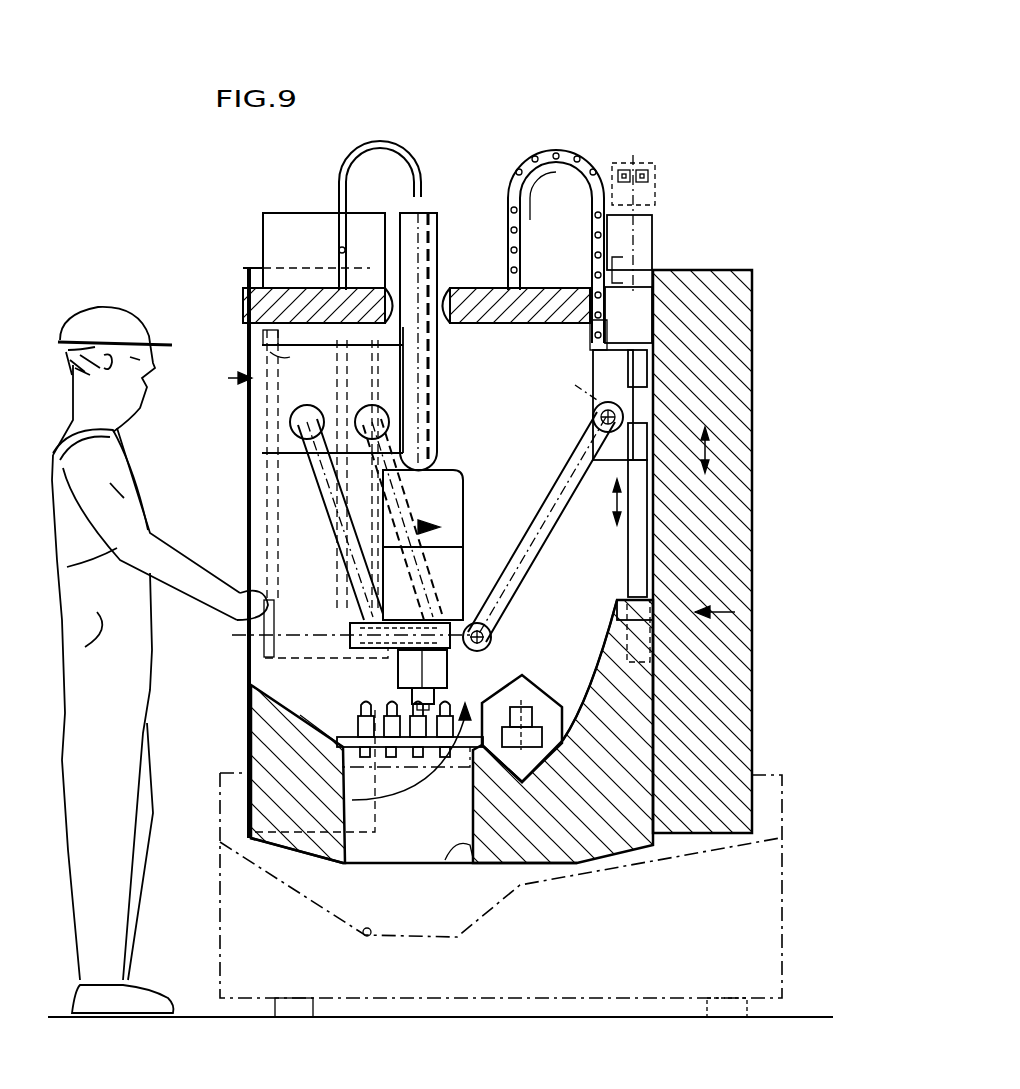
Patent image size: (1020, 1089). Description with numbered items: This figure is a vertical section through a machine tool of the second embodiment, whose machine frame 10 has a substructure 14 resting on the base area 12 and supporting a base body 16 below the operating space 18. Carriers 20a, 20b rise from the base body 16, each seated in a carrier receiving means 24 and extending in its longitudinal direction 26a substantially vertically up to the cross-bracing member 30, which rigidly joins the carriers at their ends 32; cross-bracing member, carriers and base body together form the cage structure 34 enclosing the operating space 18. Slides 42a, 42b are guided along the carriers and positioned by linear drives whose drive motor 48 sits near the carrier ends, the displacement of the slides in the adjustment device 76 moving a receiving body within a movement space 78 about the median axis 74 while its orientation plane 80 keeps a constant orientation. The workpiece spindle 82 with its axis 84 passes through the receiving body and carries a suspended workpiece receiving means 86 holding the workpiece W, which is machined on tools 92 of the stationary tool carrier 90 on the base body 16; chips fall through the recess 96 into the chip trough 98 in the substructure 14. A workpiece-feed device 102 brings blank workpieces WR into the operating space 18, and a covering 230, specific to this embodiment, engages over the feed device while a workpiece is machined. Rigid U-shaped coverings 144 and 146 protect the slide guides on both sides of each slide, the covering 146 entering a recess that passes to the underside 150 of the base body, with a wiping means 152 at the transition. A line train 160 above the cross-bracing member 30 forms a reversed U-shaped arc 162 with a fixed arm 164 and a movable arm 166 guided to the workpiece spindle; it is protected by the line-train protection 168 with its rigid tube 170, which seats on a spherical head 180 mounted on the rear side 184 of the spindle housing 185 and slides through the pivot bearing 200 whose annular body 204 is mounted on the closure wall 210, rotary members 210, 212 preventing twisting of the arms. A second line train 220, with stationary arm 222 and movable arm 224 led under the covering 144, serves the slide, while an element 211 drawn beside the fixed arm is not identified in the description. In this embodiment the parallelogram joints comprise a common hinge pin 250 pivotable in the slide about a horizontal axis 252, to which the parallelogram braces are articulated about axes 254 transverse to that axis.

The machine frame 10 is at (745, 795).
The base area 12 is at (192, 1019).
The substructure 14 is at (760, 977).
The base body 16 is at (523, 860).
The operating space 18 is at (248, 793).
The carrier 20a is at (735, 612).
The carrier 20b is at (217, 384).
The carrier receiving means 24 is at (630, 690).
The longitudinal direction 26a is at (713, 450).
The cross-bracing member 30 is at (477, 303).
The ends 32 is at (713, 290).
The cage structure 34 is at (570, 265).
The slide 42a is at (595, 352).
The slide 42b is at (247, 343).
The drive motor 48 is at (657, 170).
The median axis 74 is at (415, 500).
The adjustment device 76 is at (627, 495).
The movement space 78 is at (630, 565).
The orientation plane 80 is at (238, 633).
The workpiece spindle 82 is at (388, 522).
The spindle axis 84 is at (345, 545).
The workpiece receiving means 86 is at (398, 690).
The tool carrier 90 is at (248, 730).
The tools 92 is at (360, 732).
The recess 96 is at (445, 860).
The chip trough 98 is at (367, 935).
The workpiece-feed device 102 is at (540, 732).
The covering 144 is at (603, 252).
The covering 146 is at (630, 527).
The underside 150 is at (627, 860).
The wiping means 152 is at (630, 580).
The line train 160 is at (393, 125).
The reversed U-shaped arc 162 is at (374, 140).
The arm 164 is at (340, 268).
The arm 166 is at (447, 215).
The line-train protection 168 is at (363, 330).
The rigid tube 170 is at (243, 286).
The spherical head 180 is at (290, 422).
The rear side 184 is at (330, 456).
The housing 185 is at (360, 485).
The pivot bearing 200 is at (445, 245).
The annular body 204 is at (445, 262).
The closure wall 210 is at (520, 290).
The fastening point 211 is at (340, 248).
The rotary member 212 is at (432, 215).
The line train 220 is at (568, 150).
The stationary arm 222 is at (528, 215).
The movable arm 224 is at (607, 215).
The covering 230 is at (541, 678).
The common hinge pin 250 is at (618, 375).
The horizontal axis 252 is at (628, 410).
The axes 254 is at (653, 422).
The workpiece W is at (412, 700).
The blank workpiece WR is at (540, 712).